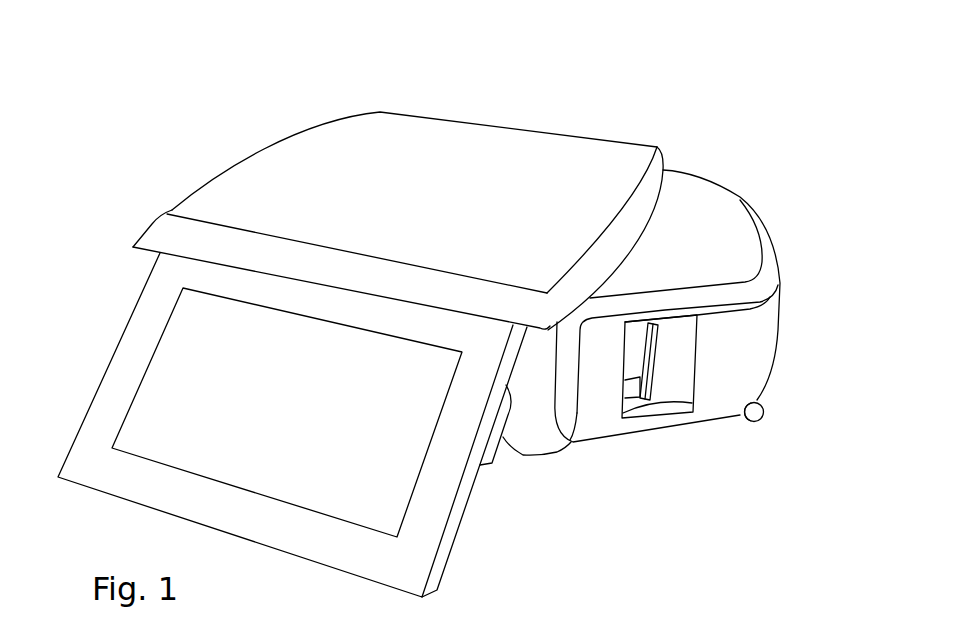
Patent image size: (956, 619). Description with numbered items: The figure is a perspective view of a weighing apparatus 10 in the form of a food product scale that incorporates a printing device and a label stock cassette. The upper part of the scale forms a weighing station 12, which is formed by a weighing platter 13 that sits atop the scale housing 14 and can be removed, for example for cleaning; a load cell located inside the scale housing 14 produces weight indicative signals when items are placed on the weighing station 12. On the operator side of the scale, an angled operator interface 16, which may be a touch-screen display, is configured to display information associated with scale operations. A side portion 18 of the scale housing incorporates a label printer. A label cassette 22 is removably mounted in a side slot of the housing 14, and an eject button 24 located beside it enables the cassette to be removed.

The weighing apparatus 10 is at (436, 312).
The weighing station 12 is at (398, 201).
The weighing platter 13 is at (370, 137).
The scale housing 14 is at (672, 324).
The operator interface 16 is at (183, 350).
The side portion 18 is at (792, 212).
The label cassette 22 is at (682, 417).
The eject button 24 is at (747, 420).